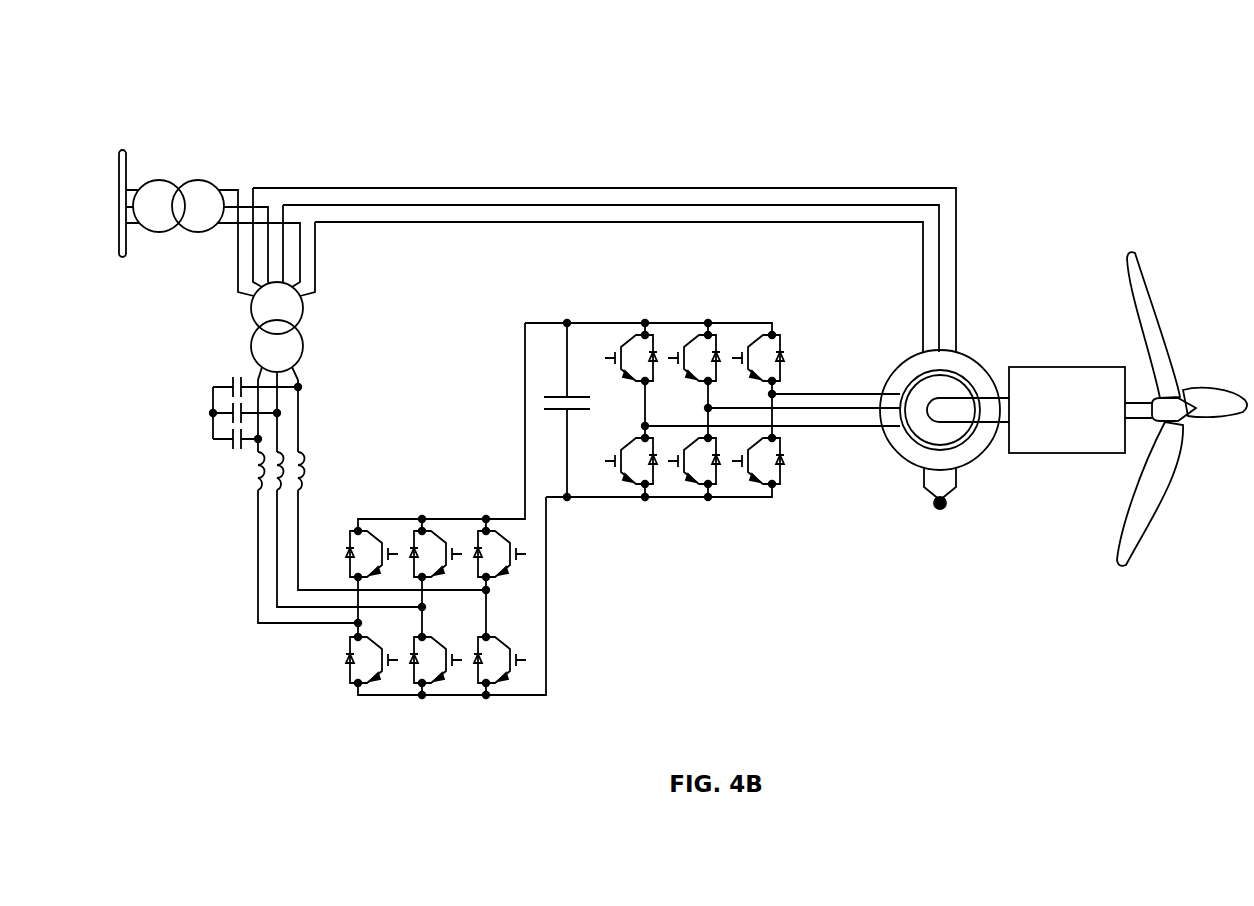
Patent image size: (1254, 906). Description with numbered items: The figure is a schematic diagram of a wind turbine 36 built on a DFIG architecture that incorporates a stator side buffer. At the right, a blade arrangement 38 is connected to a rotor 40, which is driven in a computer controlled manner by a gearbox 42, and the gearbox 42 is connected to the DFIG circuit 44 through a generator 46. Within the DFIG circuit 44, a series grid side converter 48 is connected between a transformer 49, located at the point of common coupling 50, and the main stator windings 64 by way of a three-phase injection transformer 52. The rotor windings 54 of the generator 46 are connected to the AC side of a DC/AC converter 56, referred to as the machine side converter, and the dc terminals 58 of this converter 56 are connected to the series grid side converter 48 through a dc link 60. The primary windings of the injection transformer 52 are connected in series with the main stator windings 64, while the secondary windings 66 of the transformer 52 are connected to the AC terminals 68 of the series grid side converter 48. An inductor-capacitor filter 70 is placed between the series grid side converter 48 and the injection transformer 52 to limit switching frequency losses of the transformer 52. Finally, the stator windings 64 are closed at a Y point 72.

The wind turbine 36 is at (183, 57).
The blade arrangement 38 is at (1193, 430).
The rotor 40 is at (1135, 413).
The gearbox 42 is at (1047, 367).
The DFIG circuit 44 is at (960, 248).
The generator 46 is at (977, 352).
The series grid side converter 48 is at (439, 531).
The transformer 49 is at (187, 163).
The point of common coupling 50 is at (115, 161).
The three-phase injection transformer 52 is at (250, 338).
The rotor windings 54 is at (838, 435).
The DC/AC converter 56 is at (679, 406).
The dc terminals 58 is at (645, 322).
The dc link 60 is at (525, 400).
The main stator windings 64 is at (921, 240).
The secondary windings 66 is at (308, 630).
The AC terminals 68 is at (410, 598).
The inductor-capacitor filter 70 is at (252, 458).
The Y point 72 is at (938, 510).